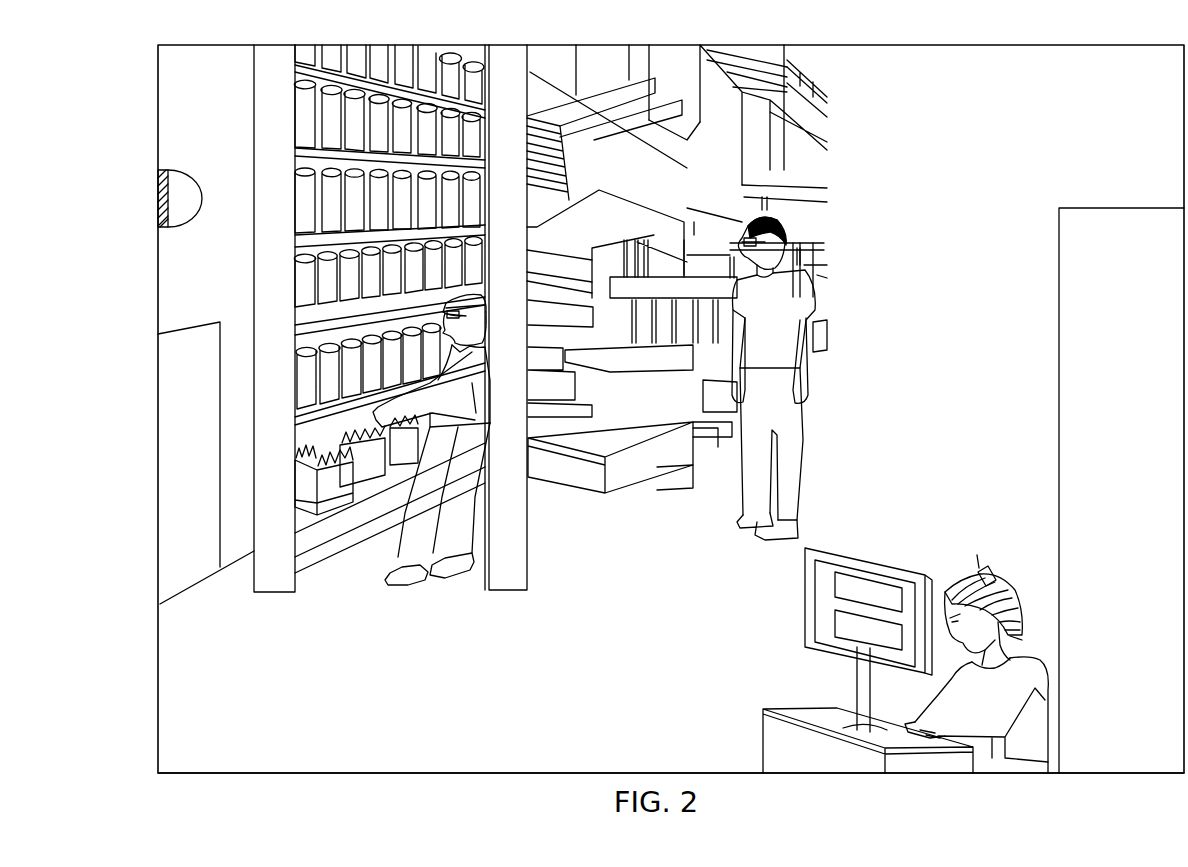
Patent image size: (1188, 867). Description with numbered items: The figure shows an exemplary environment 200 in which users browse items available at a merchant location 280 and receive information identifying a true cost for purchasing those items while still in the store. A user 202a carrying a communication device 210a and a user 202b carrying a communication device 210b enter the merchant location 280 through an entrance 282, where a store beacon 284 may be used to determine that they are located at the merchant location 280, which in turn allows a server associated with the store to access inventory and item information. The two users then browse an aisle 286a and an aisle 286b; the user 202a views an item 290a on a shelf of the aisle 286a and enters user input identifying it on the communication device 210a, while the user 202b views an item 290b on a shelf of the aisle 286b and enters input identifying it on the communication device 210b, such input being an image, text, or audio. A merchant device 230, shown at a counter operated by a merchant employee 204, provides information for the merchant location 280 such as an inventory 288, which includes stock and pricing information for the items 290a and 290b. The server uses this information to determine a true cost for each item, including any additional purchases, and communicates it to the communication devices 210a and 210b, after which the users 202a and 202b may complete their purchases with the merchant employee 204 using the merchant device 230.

The environment 200 is at (836, 35).
The user 202a is at (449, 548).
The user 202b is at (785, 300).
The merchant employee 204 is at (983, 575).
The communication device 210a is at (443, 313).
The communication device 210b is at (774, 225).
The merchant device 230 is at (869, 558).
The merchant location 280 is at (671, 757).
The entrance 282 is at (183, 557).
The store beacon 284 is at (197, 178).
The aisle 286a is at (280, 592).
The aisle 286b is at (512, 582).
The inventory 288 is at (1121, 490).
The item 290a is at (325, 510).
The item 290b is at (613, 461).